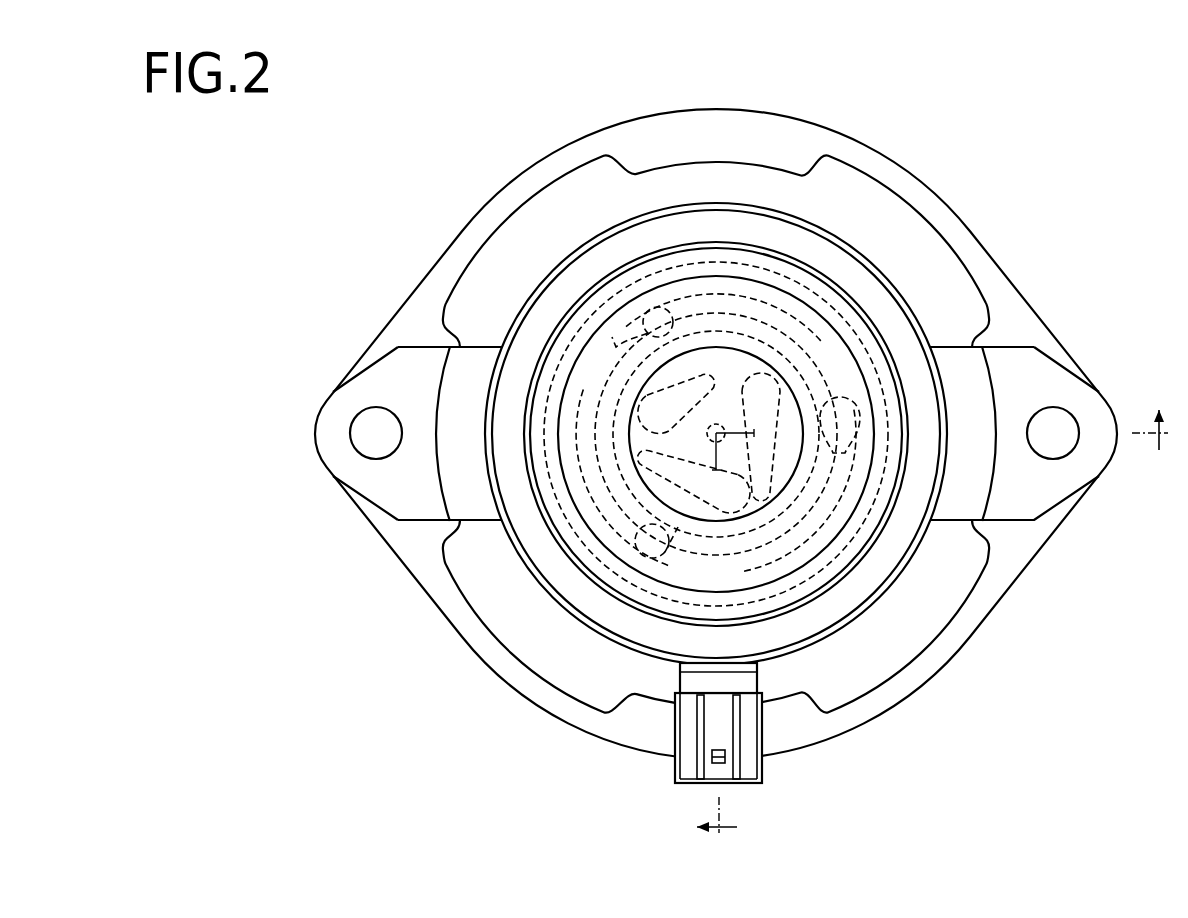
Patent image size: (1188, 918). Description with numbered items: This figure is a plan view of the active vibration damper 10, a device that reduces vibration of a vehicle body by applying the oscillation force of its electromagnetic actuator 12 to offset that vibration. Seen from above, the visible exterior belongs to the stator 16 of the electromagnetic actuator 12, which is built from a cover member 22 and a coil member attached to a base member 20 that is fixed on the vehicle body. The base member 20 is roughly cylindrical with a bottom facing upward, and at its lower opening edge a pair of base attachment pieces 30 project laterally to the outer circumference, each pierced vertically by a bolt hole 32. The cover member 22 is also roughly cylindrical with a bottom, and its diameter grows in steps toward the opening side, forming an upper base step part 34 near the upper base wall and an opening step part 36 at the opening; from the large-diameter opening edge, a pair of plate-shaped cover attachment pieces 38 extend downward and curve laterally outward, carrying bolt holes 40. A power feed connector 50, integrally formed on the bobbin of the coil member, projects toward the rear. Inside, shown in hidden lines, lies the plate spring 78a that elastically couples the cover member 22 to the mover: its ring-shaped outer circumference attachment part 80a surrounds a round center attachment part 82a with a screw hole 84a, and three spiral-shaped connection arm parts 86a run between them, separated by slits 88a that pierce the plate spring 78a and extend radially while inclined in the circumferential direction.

The active vibration damper 10 is at (1053, 173).
The electromagnetic actuator 12 is at (1040, 235).
The stator 16 is at (1043, 310).
The base member 20 is at (927, 202).
The cover member 22 is at (827, 512).
The base attachment pieces 30 is at (701, 445).
The bolt holes 32 is at (701, 471).
The bolt holes 40 is at (356, 432).
The upper base step part 34 is at (560, 347).
The opening step part 36 is at (567, 292).
The cover attachment pieces 38 is at (390, 480).
The power feed connector 50 is at (690, 733).
The plate spring 78a is at (550, 495).
The outer circumference attachment part 80a is at (593, 537).
The center attachment part 82a is at (677, 523).
The screw hole 84a is at (715, 418).
The connection arm parts 86a is at (642, 355).
The slits 88a is at (610, 320).